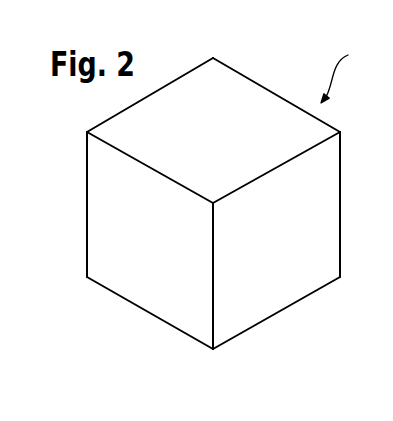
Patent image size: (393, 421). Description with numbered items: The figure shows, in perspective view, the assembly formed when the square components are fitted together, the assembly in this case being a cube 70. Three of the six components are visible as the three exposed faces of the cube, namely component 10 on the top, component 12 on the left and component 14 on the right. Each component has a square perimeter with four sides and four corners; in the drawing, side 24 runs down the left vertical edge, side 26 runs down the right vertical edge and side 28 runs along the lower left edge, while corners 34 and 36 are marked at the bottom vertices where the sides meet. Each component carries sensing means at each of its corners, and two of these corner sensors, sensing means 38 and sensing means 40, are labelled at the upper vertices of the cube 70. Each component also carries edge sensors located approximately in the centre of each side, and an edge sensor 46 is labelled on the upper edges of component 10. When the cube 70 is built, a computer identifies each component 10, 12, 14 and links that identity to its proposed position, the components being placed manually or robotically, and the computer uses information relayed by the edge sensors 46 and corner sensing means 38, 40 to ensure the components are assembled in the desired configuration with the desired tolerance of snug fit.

The component 10 is at (202, 216).
The component 12 is at (139, 265).
The component 14 is at (273, 258).
The side 24 is at (87, 194).
The side 26 is at (340, 203).
The side 28 is at (139, 338).
The corner 34 is at (86, 277).
The corner 36 is at (212, 350).
The sensing means 38 is at (156, 111).
The sensing means 40 is at (264, 174).
The edge sensor 46 is at (213, 127).
The cube 70 is at (347, 73).